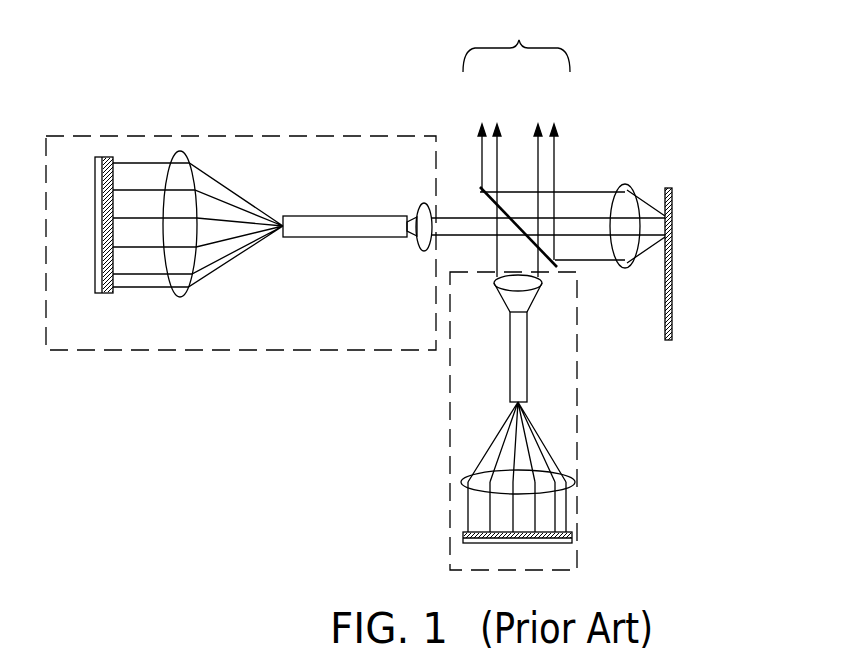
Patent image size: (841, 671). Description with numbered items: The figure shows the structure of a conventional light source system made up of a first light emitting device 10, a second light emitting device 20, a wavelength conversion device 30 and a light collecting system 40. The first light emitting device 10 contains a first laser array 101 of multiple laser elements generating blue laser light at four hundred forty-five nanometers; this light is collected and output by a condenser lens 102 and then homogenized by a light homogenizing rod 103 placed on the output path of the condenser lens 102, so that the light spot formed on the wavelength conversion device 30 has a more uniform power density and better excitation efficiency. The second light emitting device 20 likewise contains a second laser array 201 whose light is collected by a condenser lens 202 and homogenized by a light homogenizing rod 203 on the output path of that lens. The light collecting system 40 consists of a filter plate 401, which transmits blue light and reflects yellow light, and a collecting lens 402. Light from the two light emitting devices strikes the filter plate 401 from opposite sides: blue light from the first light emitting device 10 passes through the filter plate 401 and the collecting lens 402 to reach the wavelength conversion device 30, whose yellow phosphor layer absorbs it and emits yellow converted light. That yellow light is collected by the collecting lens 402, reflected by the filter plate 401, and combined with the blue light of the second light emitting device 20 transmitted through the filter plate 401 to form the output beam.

The first light emitting device 10 is at (132, 352).
The first laser array 101 is at (112, 297).
The condenser lens 102 is at (183, 297).
The light homogenizing rod 103 is at (325, 231).
The second light emitting device 20 is at (577, 422).
The second laser array 201 is at (462, 548).
The condenser lens 202 is at (466, 482).
The light homogenizing rod 203 is at (516, 370).
The wavelength conversion device 30 is at (672, 293).
The light collecting system 40 is at (519, 45).
The filter plate 401 is at (486, 191).
The collecting lens 402 is at (622, 192).